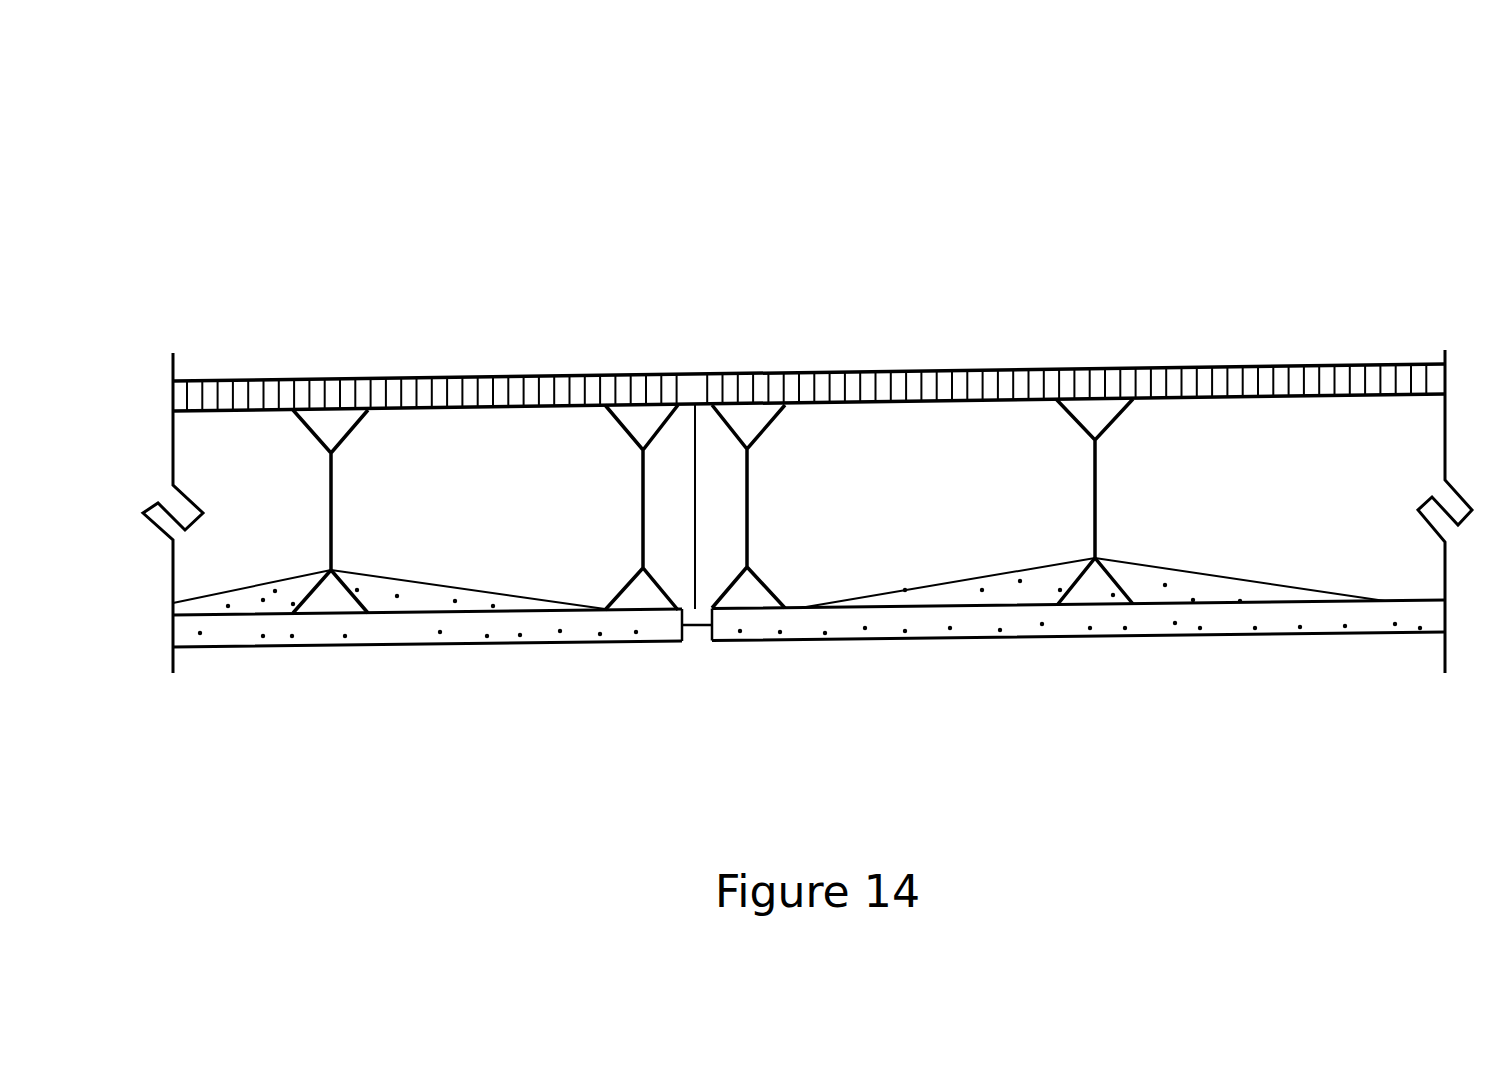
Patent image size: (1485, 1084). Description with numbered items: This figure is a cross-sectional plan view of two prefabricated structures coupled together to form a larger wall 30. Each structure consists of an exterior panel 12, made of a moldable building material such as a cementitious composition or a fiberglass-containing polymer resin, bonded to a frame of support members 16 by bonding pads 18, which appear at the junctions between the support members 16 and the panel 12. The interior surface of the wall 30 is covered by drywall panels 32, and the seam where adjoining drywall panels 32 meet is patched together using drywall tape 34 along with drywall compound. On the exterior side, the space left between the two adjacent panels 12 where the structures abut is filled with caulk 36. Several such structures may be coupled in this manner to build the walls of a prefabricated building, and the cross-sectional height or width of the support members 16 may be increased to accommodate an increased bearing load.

The wall 30 is at (736, 72).
The panel 12 is at (1153, 637).
The support members 16 is at (1088, 398).
The bonding pads 18 is at (1208, 585).
The drywall panels 32 is at (966, 378).
The drywall tape 34 is at (656, 366).
The caulk 36 is at (692, 643).